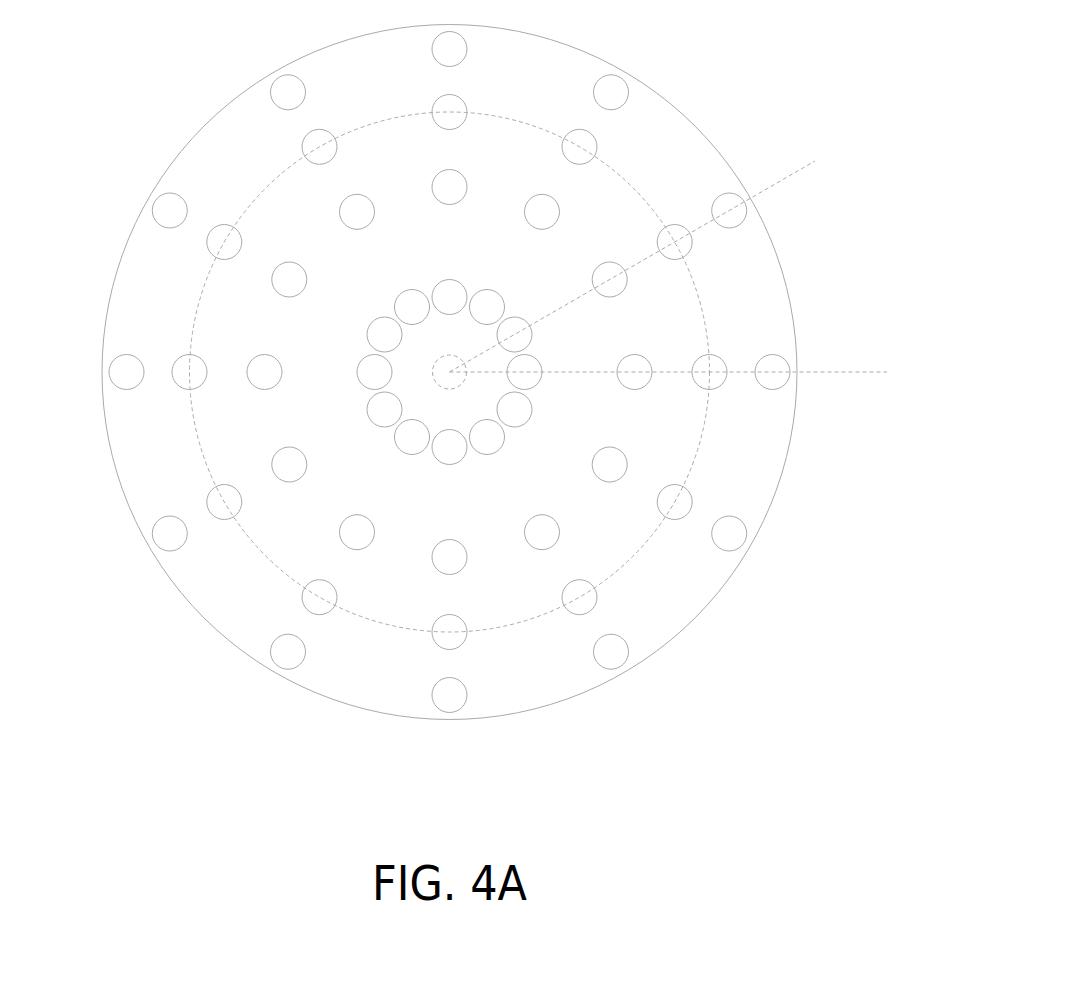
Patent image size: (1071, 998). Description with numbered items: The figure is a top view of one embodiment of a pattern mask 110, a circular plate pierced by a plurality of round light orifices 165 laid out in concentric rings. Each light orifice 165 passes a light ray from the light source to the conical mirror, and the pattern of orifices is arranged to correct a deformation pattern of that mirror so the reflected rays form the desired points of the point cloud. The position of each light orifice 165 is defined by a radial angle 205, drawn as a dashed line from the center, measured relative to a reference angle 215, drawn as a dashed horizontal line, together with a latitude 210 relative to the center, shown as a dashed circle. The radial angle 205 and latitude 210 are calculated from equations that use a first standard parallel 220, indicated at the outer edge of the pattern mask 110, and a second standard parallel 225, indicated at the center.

The pattern mask 110 is at (488, 372).
The light orifice 165 is at (684, 224).
The radial angle 205 is at (785, 175).
The latitude 210 is at (705, 313).
The reference angle 215 is at (847, 368).
The first standard parallel 220 is at (767, 515).
The second standard parallel 225 is at (450, 372).